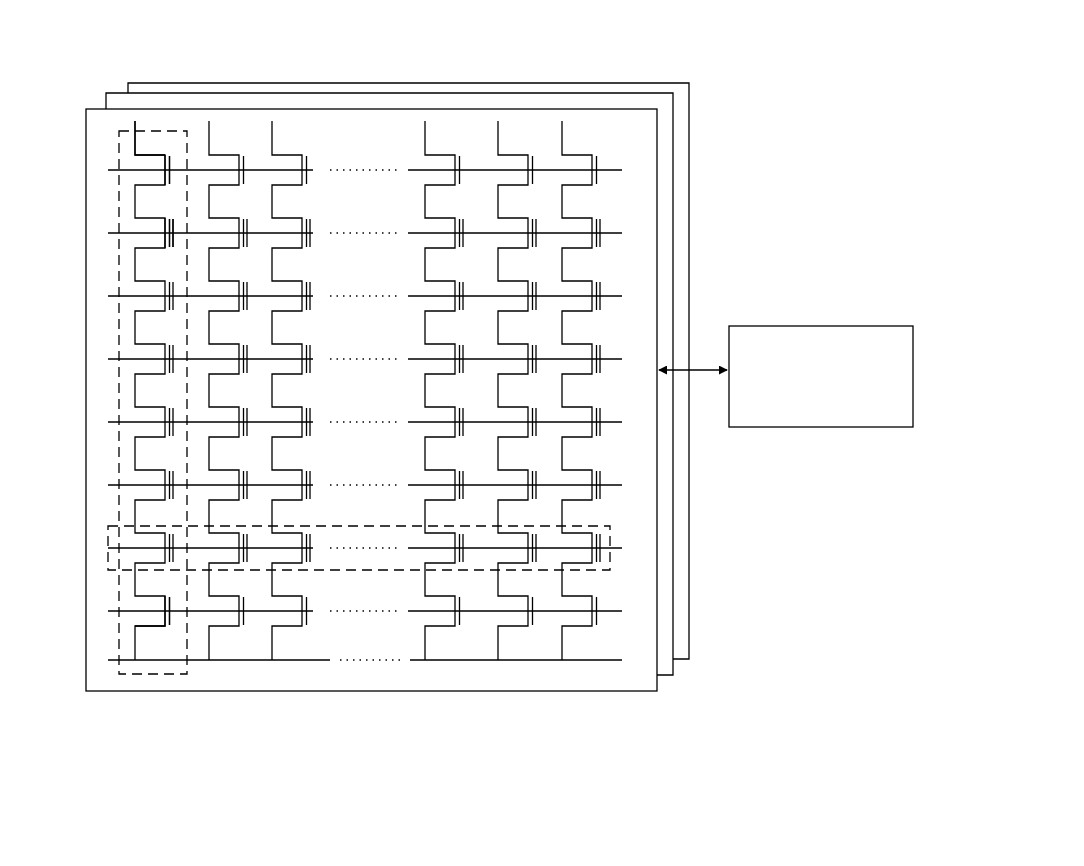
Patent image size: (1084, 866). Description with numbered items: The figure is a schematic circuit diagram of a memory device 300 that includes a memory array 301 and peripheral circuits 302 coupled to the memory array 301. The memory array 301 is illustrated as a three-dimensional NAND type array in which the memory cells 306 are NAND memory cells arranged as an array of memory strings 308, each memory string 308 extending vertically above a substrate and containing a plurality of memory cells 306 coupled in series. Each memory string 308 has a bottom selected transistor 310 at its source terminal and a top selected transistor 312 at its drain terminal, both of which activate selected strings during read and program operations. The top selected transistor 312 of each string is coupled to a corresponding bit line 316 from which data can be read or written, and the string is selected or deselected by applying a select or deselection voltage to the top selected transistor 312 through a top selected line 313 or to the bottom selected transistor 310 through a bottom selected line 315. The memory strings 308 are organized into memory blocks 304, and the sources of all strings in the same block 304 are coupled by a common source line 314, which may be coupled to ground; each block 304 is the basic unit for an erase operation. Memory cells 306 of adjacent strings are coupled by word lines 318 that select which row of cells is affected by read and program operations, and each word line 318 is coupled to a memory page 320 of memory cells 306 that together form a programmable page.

The memory device 300 is at (526, 39).
The memory array 301 is at (656, 71).
The peripheral circuits 302 is at (888, 326).
The memory block 304 is at (561, 109).
The memory cell 306 is at (167, 272).
The memory string 308 is at (118, 208).
The bottom selected transistor 310 is at (164, 637).
The top selected transistor 312 is at (164, 146).
The top selected line 313 is at (599, 170).
The source line 314 is at (225, 660).
The bottom selected line 315 is at (600, 611).
The bit line 316 is at (136, 132).
The word line 318 is at (318, 484).
The memory page 320 is at (318, 527).